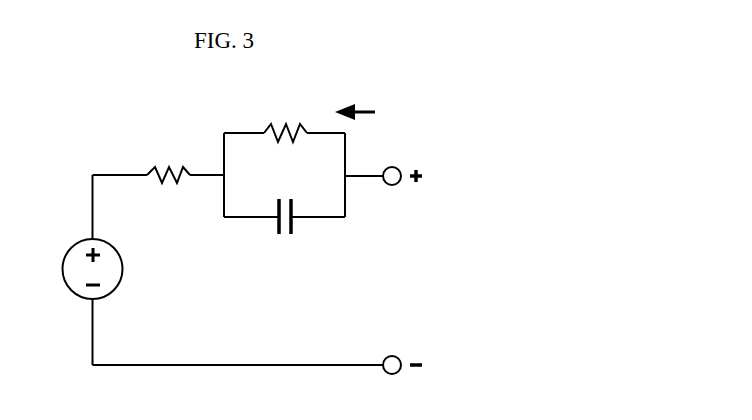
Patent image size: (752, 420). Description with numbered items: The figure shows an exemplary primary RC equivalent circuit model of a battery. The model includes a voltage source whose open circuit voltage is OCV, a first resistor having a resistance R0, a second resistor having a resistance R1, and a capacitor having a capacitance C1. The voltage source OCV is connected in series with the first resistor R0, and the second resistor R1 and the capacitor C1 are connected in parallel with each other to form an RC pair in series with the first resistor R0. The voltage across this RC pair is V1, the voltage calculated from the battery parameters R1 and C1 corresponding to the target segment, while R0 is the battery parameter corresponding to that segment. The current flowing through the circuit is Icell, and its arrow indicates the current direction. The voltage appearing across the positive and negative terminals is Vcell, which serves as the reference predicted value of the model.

The resistance of the first resistor R0 is at (168, 161).
The resistance of the second resistor R1 is at (285, 119).
The capacitance of the capacitor C1 is at (286, 197).
The voltage calculated by the battery parameters V1 is at (286, 232).
The OCV of the voltage source OCV is at (65, 269).
The current Icell is at (375, 110).
The reference predicted value Vcell is at (402, 267).